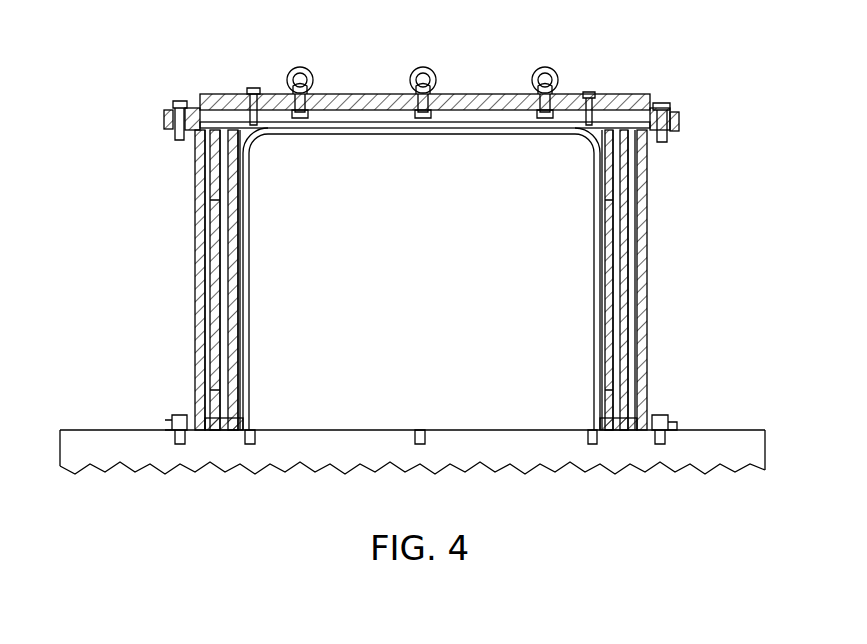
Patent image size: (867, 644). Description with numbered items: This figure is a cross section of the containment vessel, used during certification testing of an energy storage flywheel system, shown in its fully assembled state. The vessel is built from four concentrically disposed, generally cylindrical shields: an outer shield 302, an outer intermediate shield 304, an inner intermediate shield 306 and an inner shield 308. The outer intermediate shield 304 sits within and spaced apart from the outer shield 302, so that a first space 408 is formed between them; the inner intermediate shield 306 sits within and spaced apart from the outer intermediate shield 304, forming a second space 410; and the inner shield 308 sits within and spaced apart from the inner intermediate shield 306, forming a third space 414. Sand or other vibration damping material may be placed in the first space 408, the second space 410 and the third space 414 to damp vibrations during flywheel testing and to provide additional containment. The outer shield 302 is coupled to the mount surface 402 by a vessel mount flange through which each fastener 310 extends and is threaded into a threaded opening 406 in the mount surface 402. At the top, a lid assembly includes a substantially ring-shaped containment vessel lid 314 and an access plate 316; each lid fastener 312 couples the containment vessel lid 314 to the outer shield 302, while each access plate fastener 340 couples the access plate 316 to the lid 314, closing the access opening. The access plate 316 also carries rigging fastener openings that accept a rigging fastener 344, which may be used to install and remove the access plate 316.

The outer shield 302 is at (648, 156).
The outer intermediate shield 304 is at (642, 216).
The inner intermediate shield 306 is at (596, 241).
The inner shield 308 is at (602, 286).
The fastener 310 is at (602, 92).
The lid fastener 312 is at (672, 96).
The containment vessel lid 314 is at (215, 100).
The access plate 316 is at (378, 96).
The access plate fastener 340 is at (256, 88).
The rigging fastener 344 is at (302, 66).
The mount surface 402 is at (738, 429).
The threaded opening 406 is at (672, 439).
The first space 408 is at (644, 266).
The second space 410 is at (634, 322).
The third space 414 is at (600, 347).